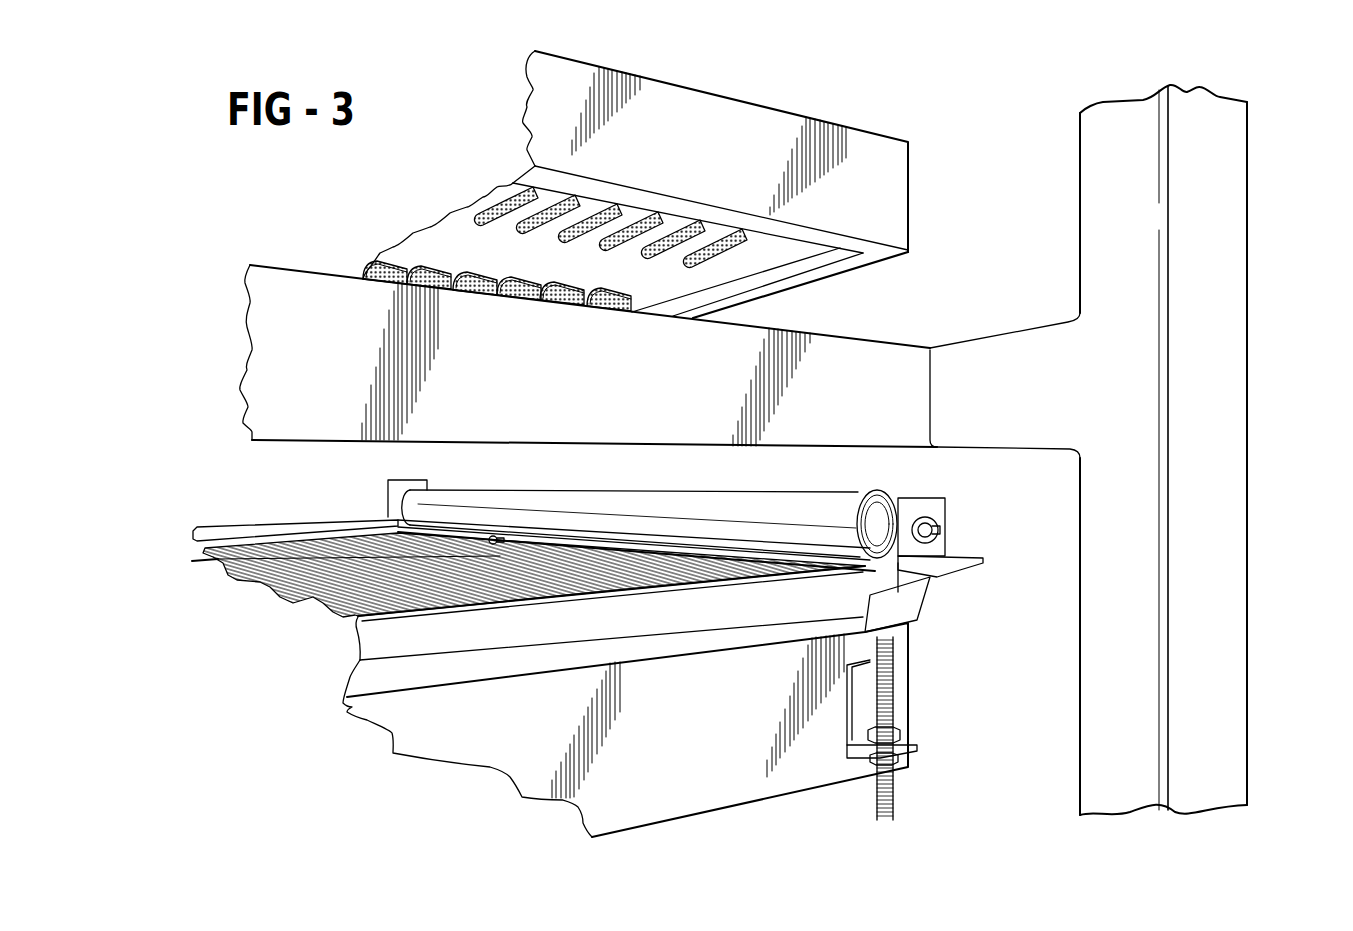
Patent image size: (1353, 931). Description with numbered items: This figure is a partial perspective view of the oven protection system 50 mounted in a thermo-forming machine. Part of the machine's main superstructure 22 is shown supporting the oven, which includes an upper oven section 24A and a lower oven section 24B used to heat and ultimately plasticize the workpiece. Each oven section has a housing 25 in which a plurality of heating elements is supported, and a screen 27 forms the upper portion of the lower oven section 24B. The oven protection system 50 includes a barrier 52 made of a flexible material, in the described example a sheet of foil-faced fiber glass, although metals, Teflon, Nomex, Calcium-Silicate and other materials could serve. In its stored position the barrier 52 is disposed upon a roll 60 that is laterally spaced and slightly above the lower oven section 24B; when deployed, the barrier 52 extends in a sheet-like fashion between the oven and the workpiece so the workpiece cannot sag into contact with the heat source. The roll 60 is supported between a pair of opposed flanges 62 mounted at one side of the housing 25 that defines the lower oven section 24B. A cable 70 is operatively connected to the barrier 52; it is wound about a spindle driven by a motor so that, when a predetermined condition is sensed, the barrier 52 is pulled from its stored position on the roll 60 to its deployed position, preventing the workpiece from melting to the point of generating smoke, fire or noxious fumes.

The main superstructure 22 is at (1218, 397).
The upper oven section 24A is at (595, 239).
The lower oven section 24B is at (229, 518).
The housing 25 is at (693, 115).
The screen 27 is at (320, 597).
The oven protection system 50 is at (645, 426).
The barrier 52 is at (773, 548).
The roll 60 is at (892, 497).
The flanges 62 is at (390, 490).
The cable 70 is at (205, 565).